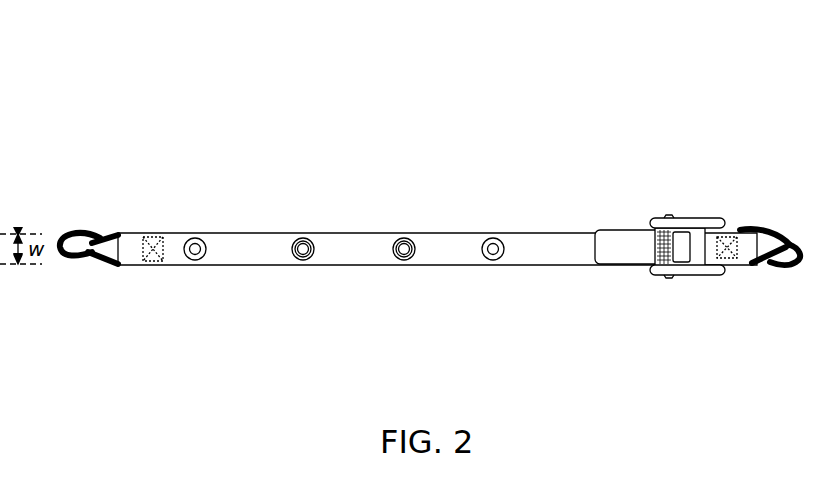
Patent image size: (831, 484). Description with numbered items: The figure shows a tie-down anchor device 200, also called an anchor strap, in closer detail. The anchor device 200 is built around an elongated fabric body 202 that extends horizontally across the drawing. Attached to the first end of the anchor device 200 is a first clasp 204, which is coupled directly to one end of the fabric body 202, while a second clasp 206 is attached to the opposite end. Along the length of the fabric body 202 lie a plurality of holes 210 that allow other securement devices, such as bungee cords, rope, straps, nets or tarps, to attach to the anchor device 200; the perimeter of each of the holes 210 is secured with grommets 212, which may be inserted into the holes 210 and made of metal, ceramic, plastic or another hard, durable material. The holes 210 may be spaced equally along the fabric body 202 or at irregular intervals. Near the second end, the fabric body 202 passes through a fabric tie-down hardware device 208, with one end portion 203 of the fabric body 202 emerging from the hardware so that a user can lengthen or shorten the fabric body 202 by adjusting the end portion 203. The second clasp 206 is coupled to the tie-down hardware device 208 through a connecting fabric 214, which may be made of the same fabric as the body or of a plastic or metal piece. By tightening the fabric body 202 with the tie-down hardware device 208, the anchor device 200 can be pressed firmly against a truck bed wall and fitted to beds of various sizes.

The tie-down anchor device 200 is at (193, 100).
The fabric body 202 is at (465, 247).
The end portion of the fabric body 203 is at (623, 249).
The first clasp 204 is at (76, 238).
The second clasp 206 is at (786, 240).
The fabric tie-down hardware device 208 is at (668, 218).
The holes 210 is at (304, 251).
The grommets 212 is at (194, 240).
The connecting fabric 214 is at (729, 246).